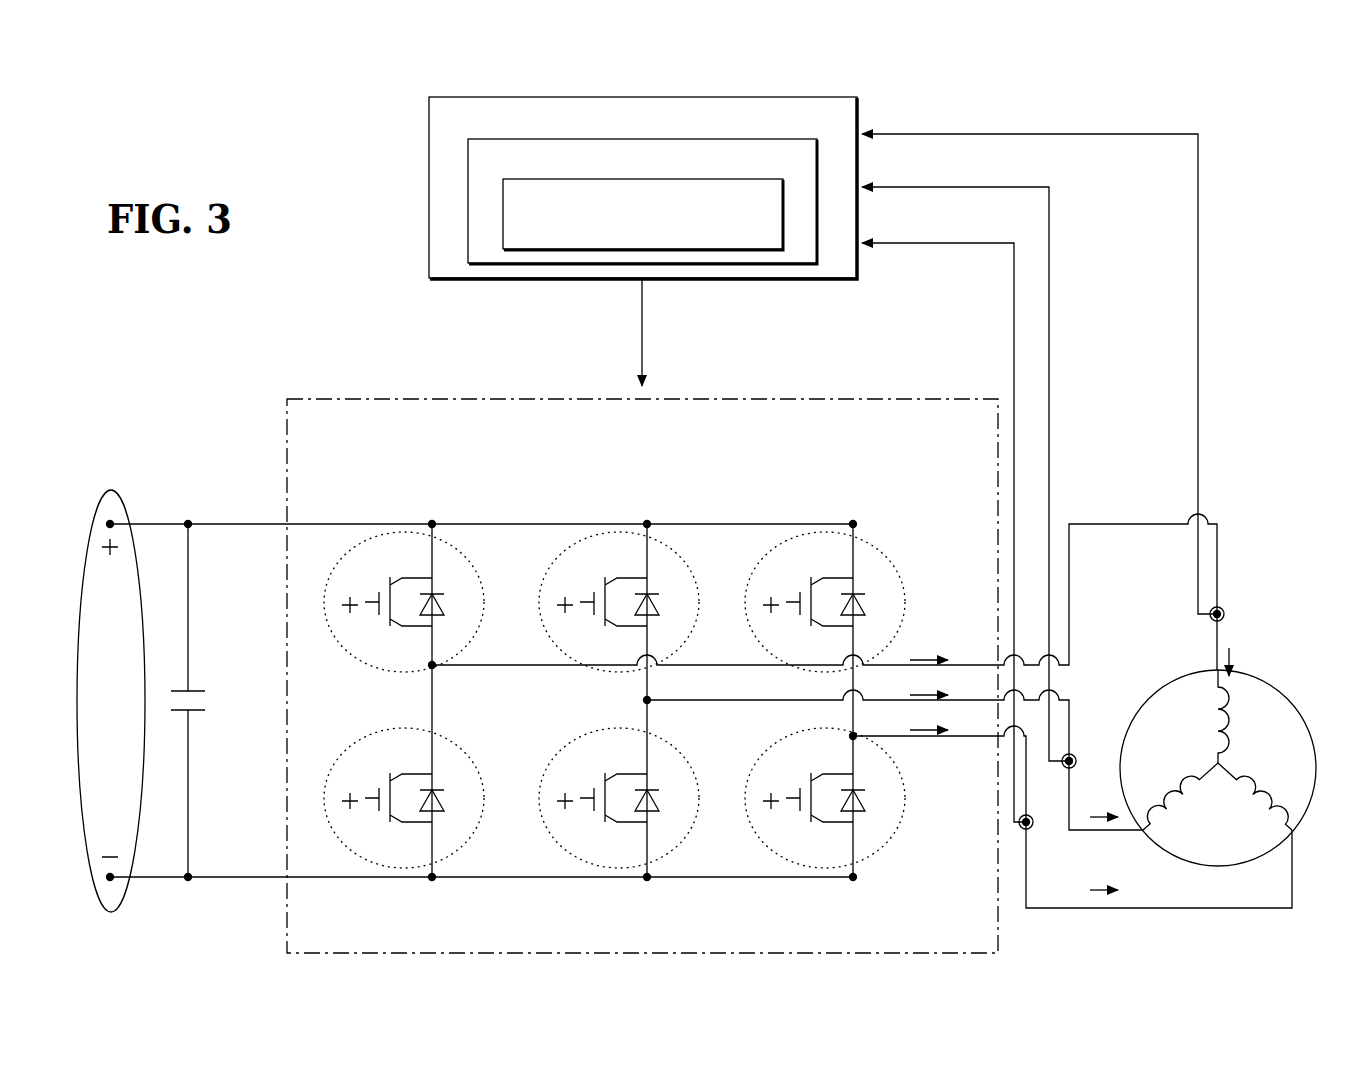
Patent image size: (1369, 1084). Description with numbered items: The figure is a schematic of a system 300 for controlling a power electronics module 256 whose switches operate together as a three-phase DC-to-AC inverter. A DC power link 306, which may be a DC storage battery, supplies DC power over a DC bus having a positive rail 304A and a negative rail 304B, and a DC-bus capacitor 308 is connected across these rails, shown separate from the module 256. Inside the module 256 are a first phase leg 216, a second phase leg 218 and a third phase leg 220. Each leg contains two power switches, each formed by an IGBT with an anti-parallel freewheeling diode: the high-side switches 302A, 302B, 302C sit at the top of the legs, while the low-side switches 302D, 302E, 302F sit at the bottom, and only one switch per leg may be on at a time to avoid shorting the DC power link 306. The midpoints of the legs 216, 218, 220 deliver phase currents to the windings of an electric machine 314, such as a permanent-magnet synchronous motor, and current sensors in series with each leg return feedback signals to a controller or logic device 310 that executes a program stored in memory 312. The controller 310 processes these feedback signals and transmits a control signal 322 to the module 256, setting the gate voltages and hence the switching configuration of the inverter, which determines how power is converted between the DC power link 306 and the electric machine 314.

The system 300 is at (958, 88).
The controller 310 is at (640, 97).
The memory 312 is at (806, 139).
The control signal 322 is at (638, 332).
The power electronics module 256 is at (486, 398).
The DC power link 306 is at (112, 490).
The DC bus 304A is at (250, 518).
The DC bus 304B is at (250, 883).
The DC-bus capacitor 308 is at (195, 712).
The high-side switch 302A is at (392, 536).
The high-side switch 302B is at (607, 536).
The high-side switch 302C is at (815, 536).
The low-side switch 302D is at (402, 868).
The low-side switch 302E is at (617, 868).
The low-side switch 302F is at (812, 868).
The first phase leg 216 is at (430, 668).
The second phase leg 218 is at (645, 700).
The third phase leg 220 is at (851, 735).
The electric machine 314 is at (1283, 698).